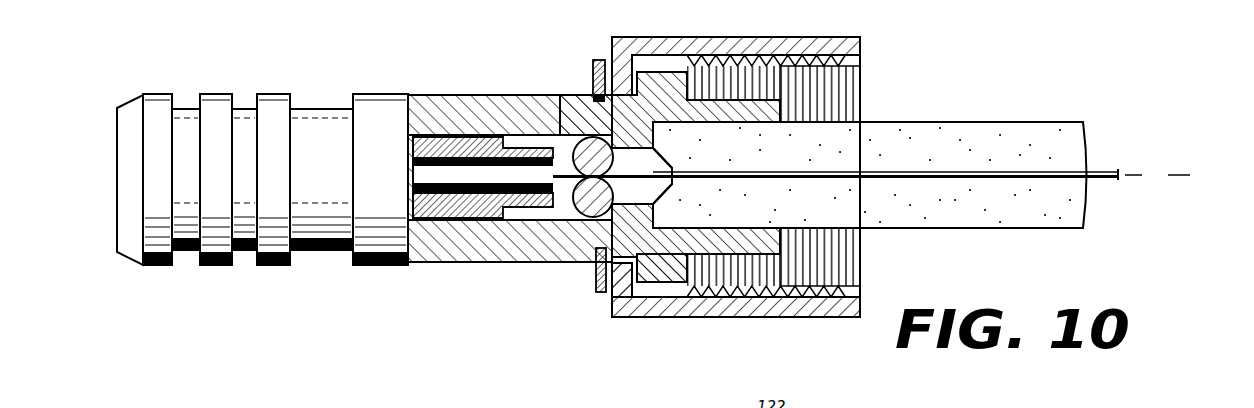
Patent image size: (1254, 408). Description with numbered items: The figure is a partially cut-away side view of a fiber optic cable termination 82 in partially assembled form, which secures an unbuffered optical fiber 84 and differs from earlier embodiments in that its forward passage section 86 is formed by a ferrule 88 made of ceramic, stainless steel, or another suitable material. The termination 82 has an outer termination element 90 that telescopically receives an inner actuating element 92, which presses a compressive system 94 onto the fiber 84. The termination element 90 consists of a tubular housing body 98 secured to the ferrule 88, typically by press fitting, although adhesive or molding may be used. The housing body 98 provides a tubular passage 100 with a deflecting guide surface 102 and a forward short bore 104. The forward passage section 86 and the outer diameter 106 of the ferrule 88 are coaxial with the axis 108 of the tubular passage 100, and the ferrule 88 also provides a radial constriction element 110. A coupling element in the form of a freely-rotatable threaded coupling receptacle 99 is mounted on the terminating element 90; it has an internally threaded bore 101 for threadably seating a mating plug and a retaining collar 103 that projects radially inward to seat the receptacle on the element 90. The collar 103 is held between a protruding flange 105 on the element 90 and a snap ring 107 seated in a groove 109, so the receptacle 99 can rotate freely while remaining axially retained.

The termination 82 is at (687, 34).
The unbuffered optical fiber 84 is at (1106, 182).
The forward passage section 86 is at (1058, 180).
The ferrule 88 is at (930, 120).
The outer termination element 90 is at (742, 100).
The inner actuating element 92 is at (451, 215).
The compressive system 94 is at (572, 201).
The tubular housing body 98 is at (780, 110).
The threaded coupling receptacle 99 is at (861, 38).
The tubular passage 100 is at (563, 157).
The internally threaded bore 101 is at (832, 264).
The deflecting guide surface 102 is at (578, 130).
The retaining collar 103 is at (622, 288).
The forward short bore 104 is at (640, 158).
The protruding flange 105 is at (655, 278).
The outer diameter 106 is at (1030, 122).
The snap ring 107 is at (596, 287).
The axis 108 is at (1152, 170).
The groove 109 is at (594, 272).
The radial constriction element 110 is at (667, 190).